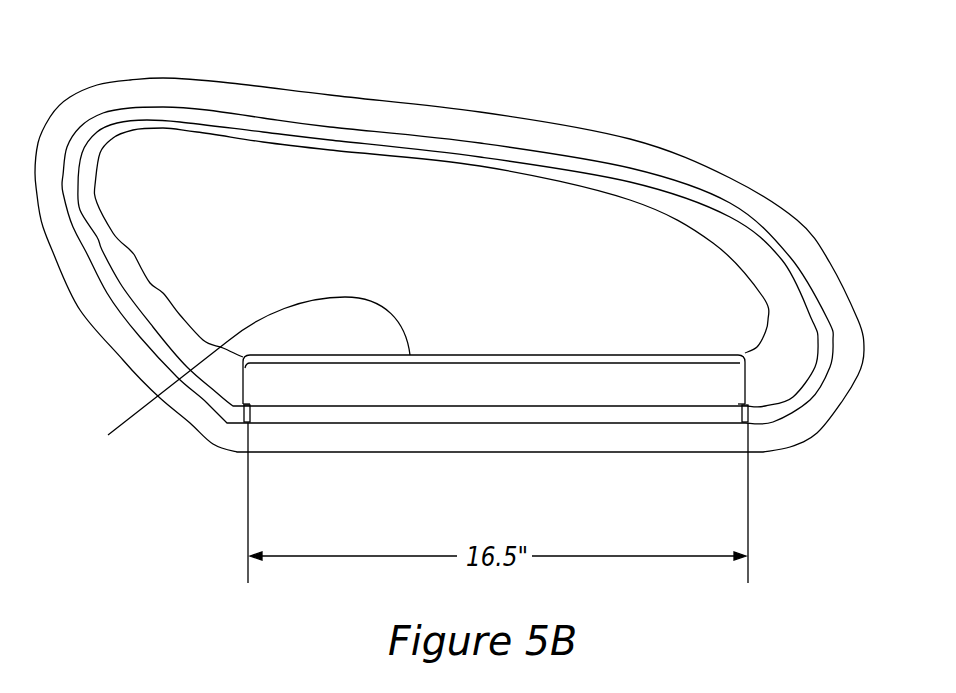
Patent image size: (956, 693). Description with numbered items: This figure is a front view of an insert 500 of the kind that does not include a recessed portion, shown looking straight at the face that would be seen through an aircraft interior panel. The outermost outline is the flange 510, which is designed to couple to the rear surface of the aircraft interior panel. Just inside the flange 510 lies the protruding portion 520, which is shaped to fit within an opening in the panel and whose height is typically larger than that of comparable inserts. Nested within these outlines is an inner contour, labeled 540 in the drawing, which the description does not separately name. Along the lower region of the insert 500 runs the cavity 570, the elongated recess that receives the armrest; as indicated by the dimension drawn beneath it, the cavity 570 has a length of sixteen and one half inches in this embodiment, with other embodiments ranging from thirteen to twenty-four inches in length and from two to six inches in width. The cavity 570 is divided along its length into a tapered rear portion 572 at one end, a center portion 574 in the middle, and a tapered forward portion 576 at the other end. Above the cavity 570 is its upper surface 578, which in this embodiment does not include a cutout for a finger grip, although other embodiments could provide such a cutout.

The insert 500 is at (538, 103).
The flange 510 is at (335, 113).
The protruding portion 520 is at (203, 117).
The inner core 540 is at (228, 272).
The cavity 570 is at (588, 388).
The tapered rear portion 572 is at (270, 383).
The center portion 574 is at (497, 383).
The tapered forward portion 576 is at (717, 383).
The upper surface 578 is at (236, 374).